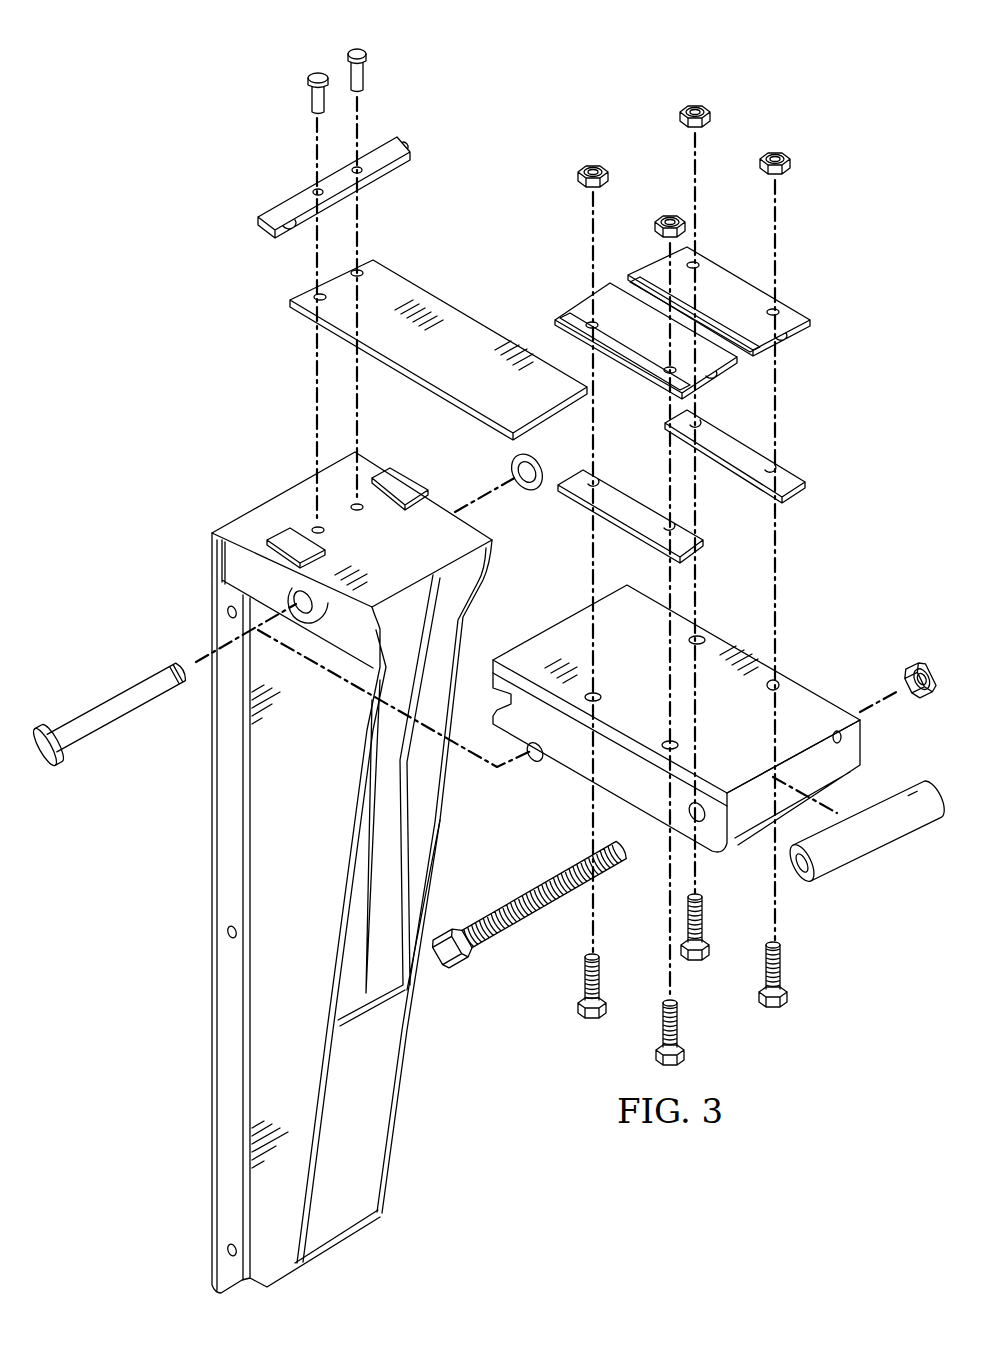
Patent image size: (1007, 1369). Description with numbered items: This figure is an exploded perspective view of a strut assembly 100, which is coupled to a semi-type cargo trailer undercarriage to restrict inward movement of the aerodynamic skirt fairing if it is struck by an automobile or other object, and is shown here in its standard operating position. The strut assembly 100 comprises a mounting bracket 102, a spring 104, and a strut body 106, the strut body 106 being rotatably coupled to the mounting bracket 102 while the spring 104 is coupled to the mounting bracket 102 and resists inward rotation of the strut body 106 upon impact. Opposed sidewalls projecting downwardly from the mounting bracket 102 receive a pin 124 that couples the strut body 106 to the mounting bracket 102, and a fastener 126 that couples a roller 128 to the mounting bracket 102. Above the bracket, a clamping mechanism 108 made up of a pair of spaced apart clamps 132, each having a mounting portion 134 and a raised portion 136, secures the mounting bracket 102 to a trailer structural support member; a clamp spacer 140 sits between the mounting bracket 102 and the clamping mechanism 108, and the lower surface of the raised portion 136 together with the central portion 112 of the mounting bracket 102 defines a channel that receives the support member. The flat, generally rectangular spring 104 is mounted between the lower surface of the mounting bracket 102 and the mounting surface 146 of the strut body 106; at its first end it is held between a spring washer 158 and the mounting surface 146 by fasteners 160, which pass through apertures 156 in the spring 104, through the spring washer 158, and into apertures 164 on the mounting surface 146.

The strut assembly 100 is at (146, 170).
The mounting bracket 102 is at (722, 633).
The spring 104 is at (474, 337).
The strut body 106 is at (208, 883).
The clamping mechanism 108 is at (706, 322).
The central portion 112 is at (805, 700).
The pin 124 is at (137, 680).
The fastener 126 is at (523, 893).
The roller 128 is at (843, 870).
The clamps 132 is at (717, 277).
The mounting portion 134 is at (572, 320).
The raised portion 136 is at (642, 273).
The clamp spacer 140 is at (627, 508).
The mounting surface 146 is at (440, 513).
The apertures 156 is at (363, 268).
The spring washer 158 is at (293, 207).
The fasteners 160 is at (318, 75).
The apertures 164 is at (317, 530).